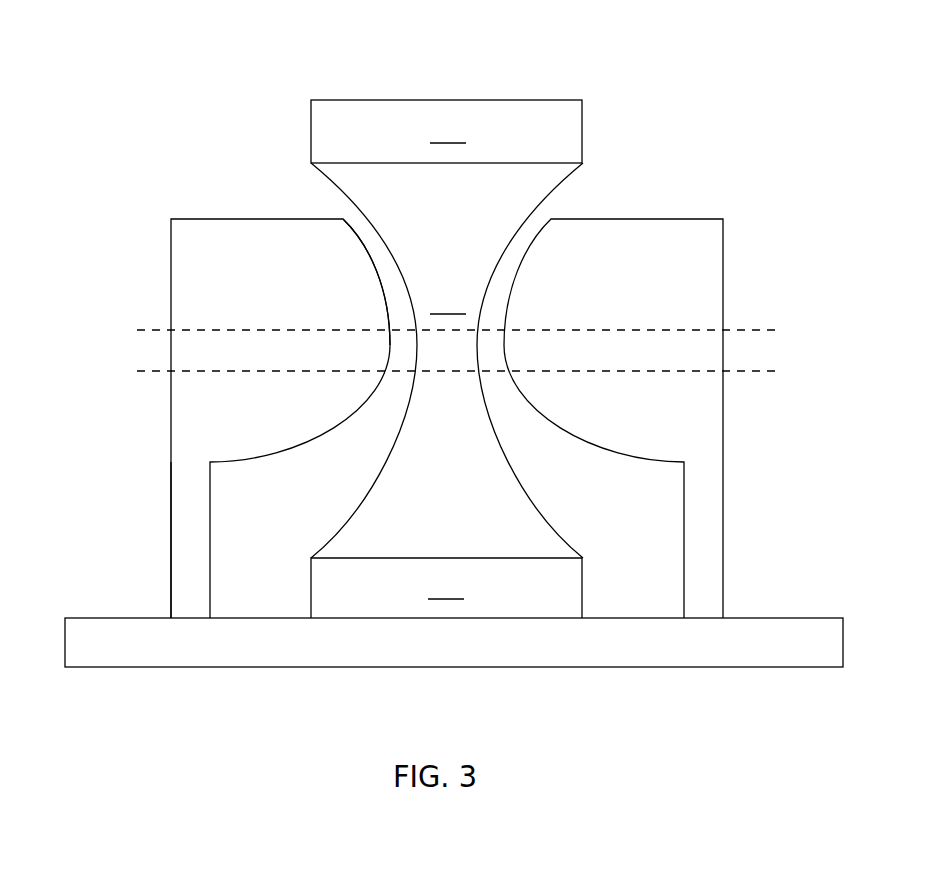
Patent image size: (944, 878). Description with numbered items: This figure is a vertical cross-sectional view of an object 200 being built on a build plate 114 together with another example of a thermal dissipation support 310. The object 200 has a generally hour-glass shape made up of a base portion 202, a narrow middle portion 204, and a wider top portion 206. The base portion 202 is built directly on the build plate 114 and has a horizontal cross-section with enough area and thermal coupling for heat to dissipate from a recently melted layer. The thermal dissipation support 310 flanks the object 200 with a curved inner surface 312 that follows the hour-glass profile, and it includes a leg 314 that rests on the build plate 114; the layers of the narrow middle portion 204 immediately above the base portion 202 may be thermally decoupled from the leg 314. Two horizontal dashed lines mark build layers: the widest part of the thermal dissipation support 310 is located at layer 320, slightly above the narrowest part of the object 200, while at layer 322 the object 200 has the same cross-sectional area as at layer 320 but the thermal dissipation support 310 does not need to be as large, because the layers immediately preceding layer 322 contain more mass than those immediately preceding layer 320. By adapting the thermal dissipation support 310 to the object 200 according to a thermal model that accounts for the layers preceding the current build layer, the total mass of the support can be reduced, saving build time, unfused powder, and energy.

The build plate 114 is at (140, 618).
The object 200 is at (447, 315).
The base portion 202 is at (446, 588).
The narrow middle portion 204 is at (447, 360).
The wider top portion 206 is at (446, 131).
The thermal dissipation support 310 is at (195, 219).
The curved inner sidewall of spacer 312 is at (385, 258).
The leg 314 is at (171, 578).
The layer 320 is at (745, 330).
The layer 322 is at (745, 371).